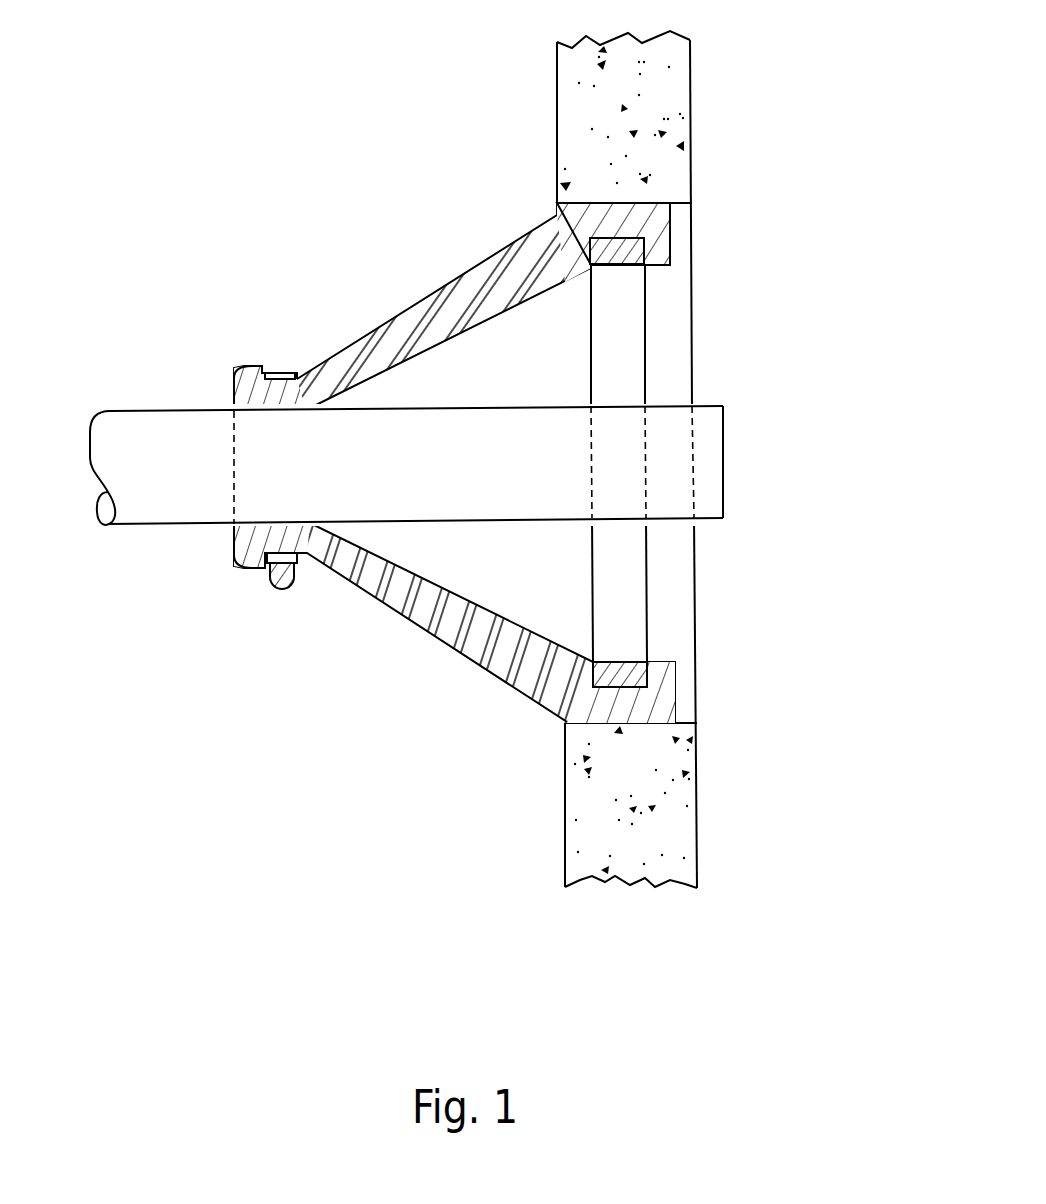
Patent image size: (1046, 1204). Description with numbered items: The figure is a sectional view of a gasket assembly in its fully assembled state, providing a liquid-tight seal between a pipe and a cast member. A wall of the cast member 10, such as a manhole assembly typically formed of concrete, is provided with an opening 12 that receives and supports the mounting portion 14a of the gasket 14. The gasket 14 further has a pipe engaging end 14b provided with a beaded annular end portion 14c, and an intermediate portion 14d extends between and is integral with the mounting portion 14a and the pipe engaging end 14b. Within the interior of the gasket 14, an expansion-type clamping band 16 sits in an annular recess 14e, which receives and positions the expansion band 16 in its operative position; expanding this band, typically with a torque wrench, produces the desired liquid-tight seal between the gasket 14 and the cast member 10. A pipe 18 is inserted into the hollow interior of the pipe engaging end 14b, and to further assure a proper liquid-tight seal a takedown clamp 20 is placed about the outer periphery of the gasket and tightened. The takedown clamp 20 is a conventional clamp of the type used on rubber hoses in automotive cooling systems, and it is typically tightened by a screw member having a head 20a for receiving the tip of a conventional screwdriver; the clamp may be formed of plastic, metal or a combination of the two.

The cast member 10 is at (528, 74).
The opening 12 is at (695, 712).
The gasket 14 is at (465, 493).
The mounting portion 14a is at (670, 229).
The pipe engaging end 14b is at (463, 654).
The beaded annular end portion 14c is at (236, 565).
The intermediate portion 14d is at (490, 257).
The annular recess 14e is at (640, 222).
The expansion-type clamping band 16 is at (572, 325).
The pipe 18 is at (168, 411).
The takedown clamp 20 is at (278, 372).
The head 20a is at (290, 590).